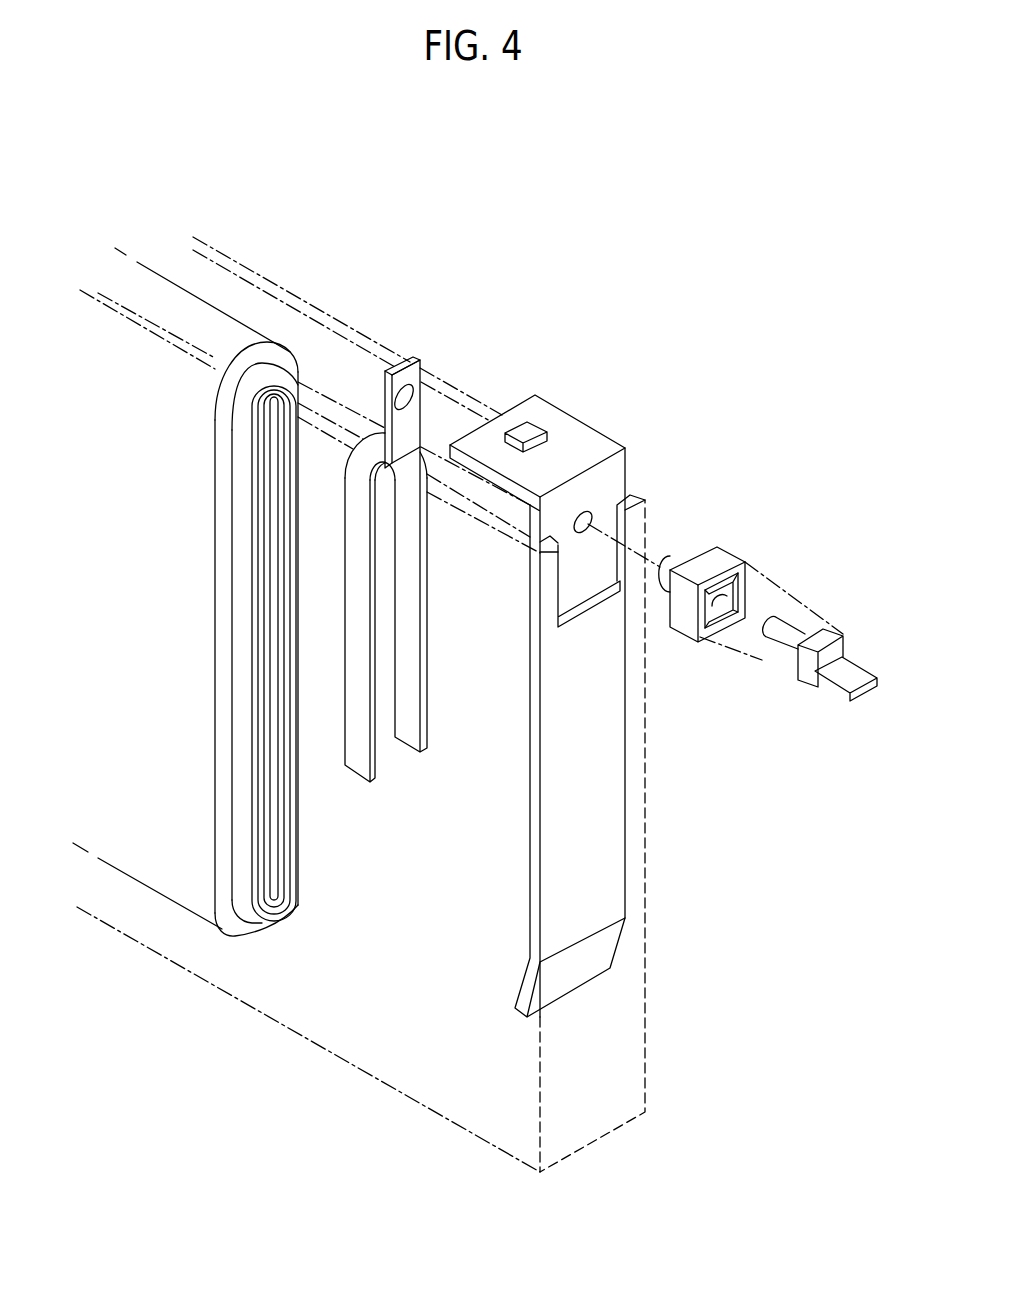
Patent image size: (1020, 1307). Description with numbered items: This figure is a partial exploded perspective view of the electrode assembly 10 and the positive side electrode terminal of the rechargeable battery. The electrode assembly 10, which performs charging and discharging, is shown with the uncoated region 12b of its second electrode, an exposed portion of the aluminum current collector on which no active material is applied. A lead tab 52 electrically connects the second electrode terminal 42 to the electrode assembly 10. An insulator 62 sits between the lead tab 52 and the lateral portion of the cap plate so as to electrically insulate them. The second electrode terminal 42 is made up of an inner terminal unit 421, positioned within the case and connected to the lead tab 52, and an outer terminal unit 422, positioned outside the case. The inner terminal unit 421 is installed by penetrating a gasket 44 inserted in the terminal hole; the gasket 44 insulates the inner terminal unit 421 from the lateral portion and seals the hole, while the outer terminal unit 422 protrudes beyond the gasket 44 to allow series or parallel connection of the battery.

The electrode assembly 10 is at (218, 320).
The uncoated region 12b is at (290, 860).
The lead tab 52 is at (424, 630).
The insulator 62 is at (594, 413).
The gasket 44 is at (717, 550).
The second electrode terminal 42 is at (788, 635).
The inner terminal unit 421 is at (780, 640).
The outer terminal unit 422 is at (830, 690).